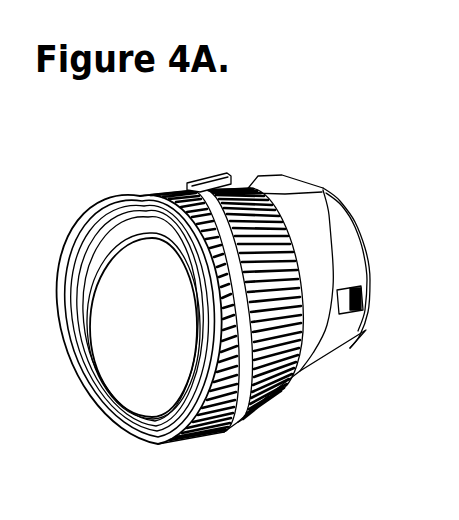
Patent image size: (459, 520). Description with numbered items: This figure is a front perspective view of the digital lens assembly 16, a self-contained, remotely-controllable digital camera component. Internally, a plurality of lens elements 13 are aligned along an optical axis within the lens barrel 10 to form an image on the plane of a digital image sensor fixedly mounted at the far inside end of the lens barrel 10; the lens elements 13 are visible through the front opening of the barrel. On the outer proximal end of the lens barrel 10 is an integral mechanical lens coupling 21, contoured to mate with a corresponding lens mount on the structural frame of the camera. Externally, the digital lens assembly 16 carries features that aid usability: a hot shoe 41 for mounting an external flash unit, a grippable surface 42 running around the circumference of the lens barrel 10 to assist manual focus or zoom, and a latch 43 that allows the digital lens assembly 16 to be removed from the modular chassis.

The lens barrel 10 is at (256, 287).
The lens elements 13 is at (107, 403).
The digital lens assembly 16 is at (367, 217).
The lens coupling 21 is at (297, 178).
The hot shoe 41 is at (226, 184).
The grippable surface 42 is at (147, 196).
The latch 43 is at (396, 308).